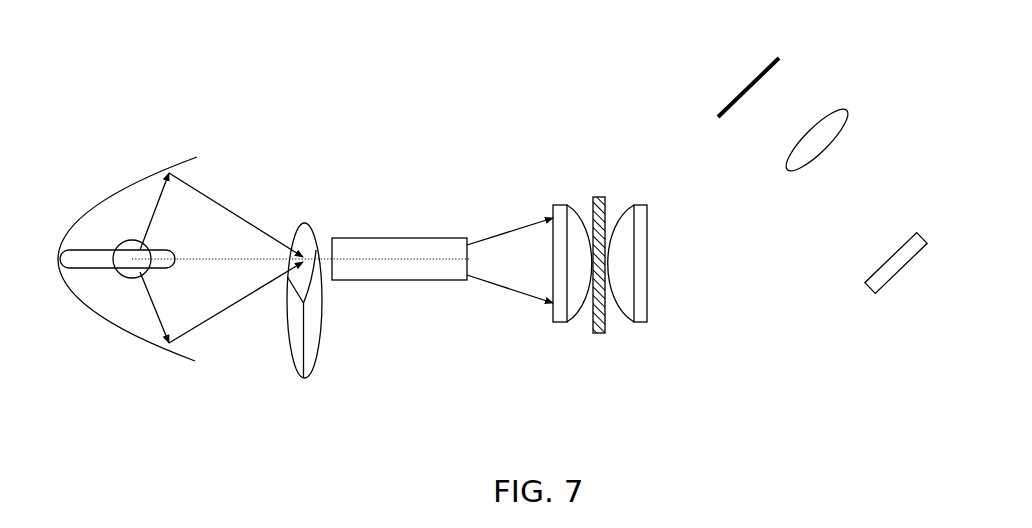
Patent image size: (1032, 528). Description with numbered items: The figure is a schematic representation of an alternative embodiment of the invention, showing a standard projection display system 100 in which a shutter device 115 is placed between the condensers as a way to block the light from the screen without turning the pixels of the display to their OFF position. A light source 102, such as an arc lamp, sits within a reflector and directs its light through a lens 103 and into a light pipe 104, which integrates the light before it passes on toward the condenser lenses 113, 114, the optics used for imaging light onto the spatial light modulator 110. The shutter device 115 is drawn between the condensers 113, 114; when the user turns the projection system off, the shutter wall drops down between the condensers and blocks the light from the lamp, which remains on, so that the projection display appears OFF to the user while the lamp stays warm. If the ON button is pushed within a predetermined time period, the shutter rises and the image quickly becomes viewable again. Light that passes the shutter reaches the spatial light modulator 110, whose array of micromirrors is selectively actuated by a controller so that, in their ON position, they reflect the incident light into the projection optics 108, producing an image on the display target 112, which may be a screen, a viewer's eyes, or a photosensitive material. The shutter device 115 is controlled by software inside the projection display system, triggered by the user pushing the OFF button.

The illumination system 100 is at (372, 147).
The light source 102 is at (143, 180).
The condenser lens 103 is at (322, 337).
The light pipe 104 is at (370, 238).
The projection optics 108 is at (840, 108).
The spatial light modulator 110 is at (902, 267).
The display target 112 is at (759, 73).
The plano-convex lens 113 is at (558, 322).
The plano-convex lens 114 is at (640, 322).
The shutter device 115 is at (597, 197).